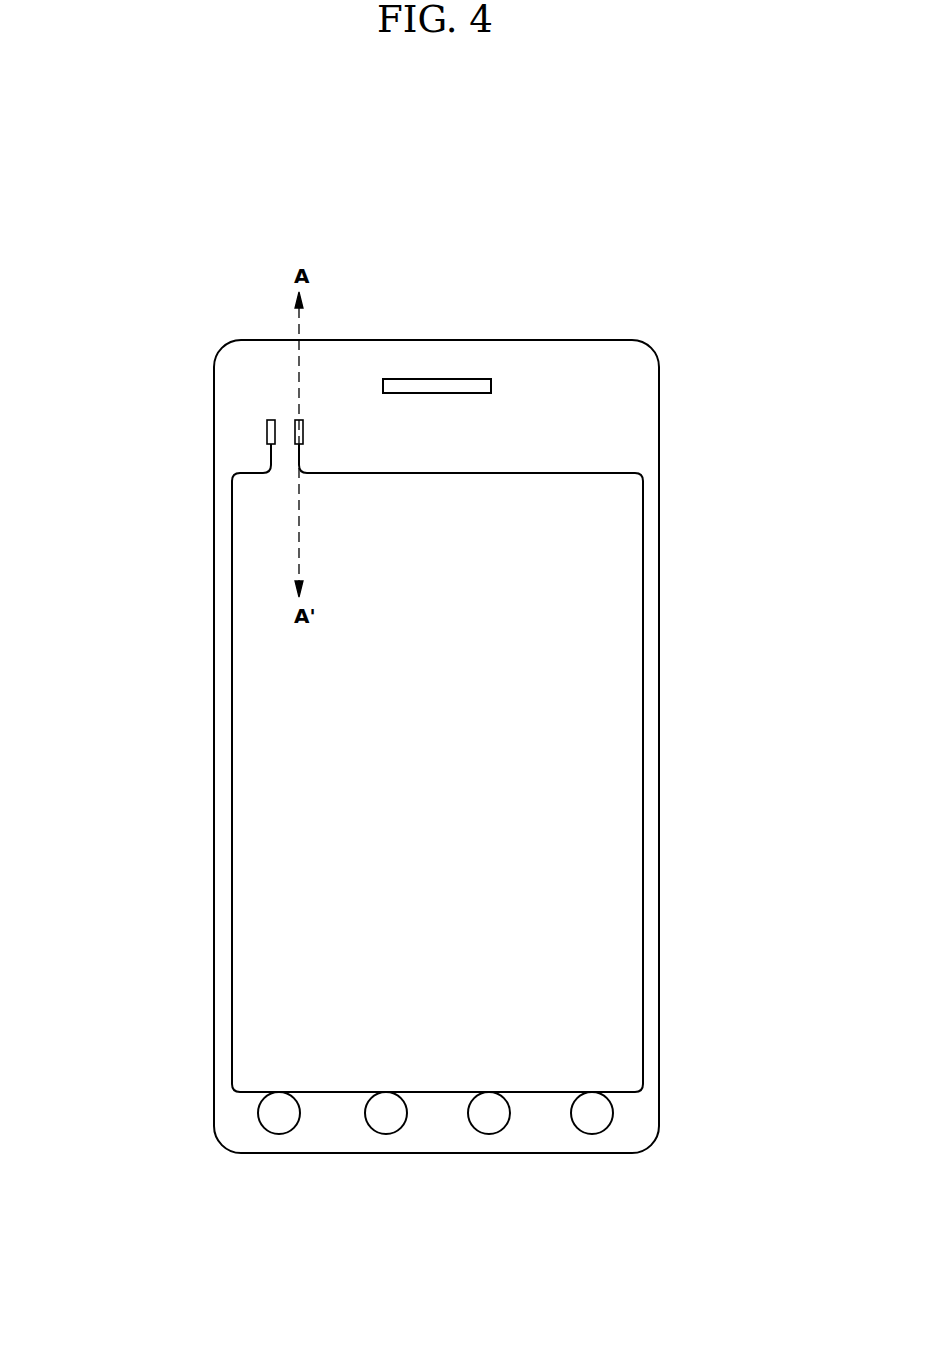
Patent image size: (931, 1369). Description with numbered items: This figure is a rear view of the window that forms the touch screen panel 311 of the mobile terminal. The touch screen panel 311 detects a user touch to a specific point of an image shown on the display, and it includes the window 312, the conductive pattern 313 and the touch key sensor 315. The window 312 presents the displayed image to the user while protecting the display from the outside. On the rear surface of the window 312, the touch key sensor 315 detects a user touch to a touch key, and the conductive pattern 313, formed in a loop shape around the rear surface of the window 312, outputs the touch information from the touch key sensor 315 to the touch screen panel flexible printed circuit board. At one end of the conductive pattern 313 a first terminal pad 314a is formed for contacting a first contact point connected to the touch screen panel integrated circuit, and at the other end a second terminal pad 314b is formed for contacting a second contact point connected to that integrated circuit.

The touch screen panel 311 is at (747, 280).
The window 312 is at (582, 718).
The conductive pattern 313 is at (231, 542).
The first terminal pad 314a is at (303, 422).
The second terminal pad 314b is at (267, 427).
The touch key sensor 315 is at (279, 1134).